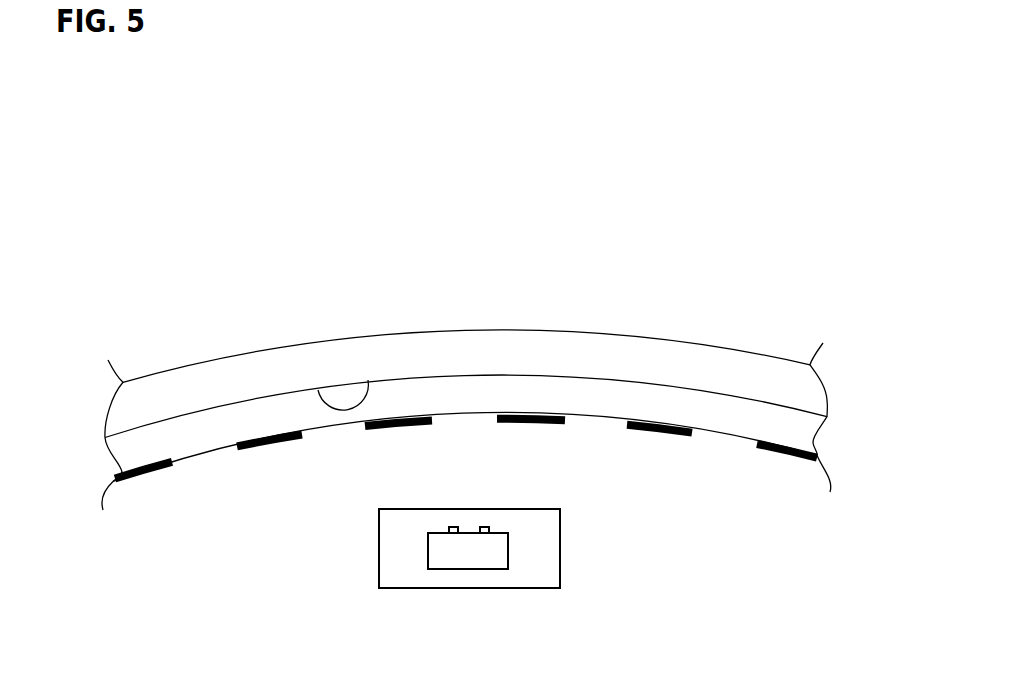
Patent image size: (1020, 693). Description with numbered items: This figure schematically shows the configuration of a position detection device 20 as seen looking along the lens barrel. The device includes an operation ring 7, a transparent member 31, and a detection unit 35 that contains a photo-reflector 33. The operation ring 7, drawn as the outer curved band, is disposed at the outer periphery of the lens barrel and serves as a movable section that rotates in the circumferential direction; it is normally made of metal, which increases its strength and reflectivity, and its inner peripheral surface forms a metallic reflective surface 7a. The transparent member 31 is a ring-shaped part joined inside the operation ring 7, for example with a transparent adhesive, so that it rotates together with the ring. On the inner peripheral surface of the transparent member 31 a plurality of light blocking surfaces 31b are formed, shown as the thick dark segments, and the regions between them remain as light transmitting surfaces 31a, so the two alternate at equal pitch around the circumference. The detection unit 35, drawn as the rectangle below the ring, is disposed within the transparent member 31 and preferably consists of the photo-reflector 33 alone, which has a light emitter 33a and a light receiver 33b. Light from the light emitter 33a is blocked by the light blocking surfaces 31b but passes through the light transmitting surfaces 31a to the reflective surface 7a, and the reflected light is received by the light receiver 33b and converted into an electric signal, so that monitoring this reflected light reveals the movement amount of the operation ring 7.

The position detection device 20 is at (177, 137).
The operation ring 7 is at (563, 357).
The reflective surface 7a is at (368, 380).
The transparent member 31 is at (197, 433).
The light transmitting surfaces 31a is at (755, 443).
The light blocking surfaces 31b is at (661, 436).
The photo-reflector 33 is at (468, 553).
The light emitter 33a is at (456, 527).
The light receiver 33b is at (482, 527).
The detection unit 35 is at (543, 563).